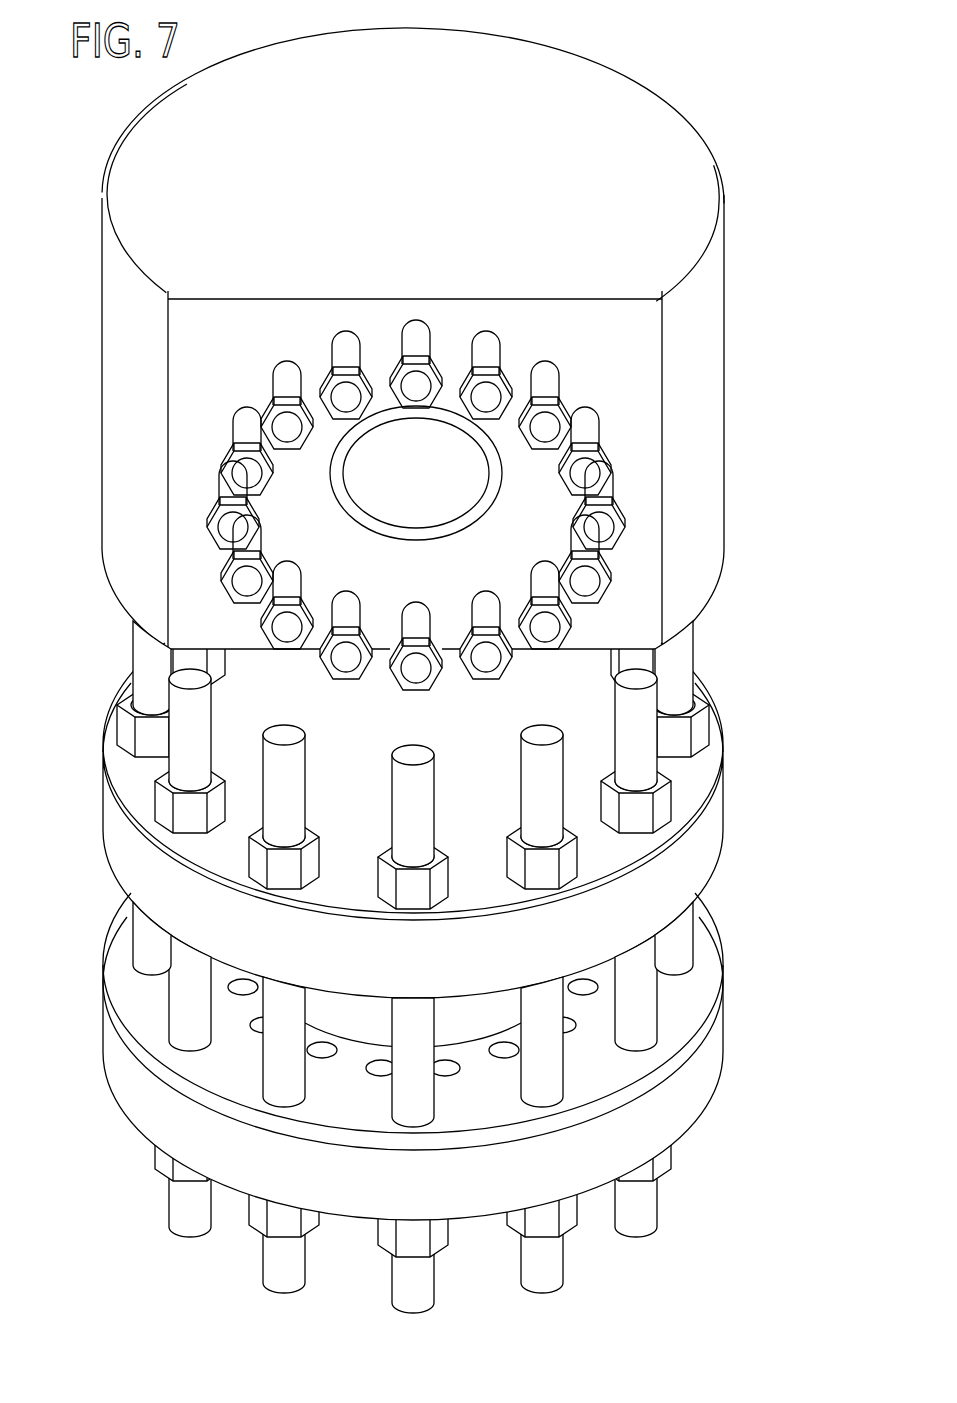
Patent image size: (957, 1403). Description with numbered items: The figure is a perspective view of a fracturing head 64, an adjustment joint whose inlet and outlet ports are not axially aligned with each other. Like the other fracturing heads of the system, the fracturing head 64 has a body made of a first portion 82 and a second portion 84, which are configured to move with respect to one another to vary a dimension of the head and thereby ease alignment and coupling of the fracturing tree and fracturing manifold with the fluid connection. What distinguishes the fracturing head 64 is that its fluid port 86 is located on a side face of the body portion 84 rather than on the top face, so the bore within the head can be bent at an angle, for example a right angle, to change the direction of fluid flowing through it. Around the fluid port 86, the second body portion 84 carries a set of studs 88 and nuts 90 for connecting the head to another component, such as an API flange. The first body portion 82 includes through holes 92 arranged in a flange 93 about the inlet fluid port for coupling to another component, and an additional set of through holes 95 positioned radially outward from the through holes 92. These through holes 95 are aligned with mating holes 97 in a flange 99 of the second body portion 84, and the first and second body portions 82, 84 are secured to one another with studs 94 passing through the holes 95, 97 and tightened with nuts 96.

The fracturing head 64 is at (718, 112).
The first portion 82 is at (722, 1040).
The second portion 84 is at (118, 447).
The fluid port 86 is at (417, 486).
The studs 88 is at (560, 386).
The nuts 90 is at (503, 373).
The through holes 92 is at (452, 1068).
The flange 93 is at (143, 1099).
The studs 94 is at (146, 942).
The through holes 95 is at (569, 1107).
The nuts 96 is at (131, 735).
The mating holes 97 is at (263, 886).
The flange 99 is at (121, 839).